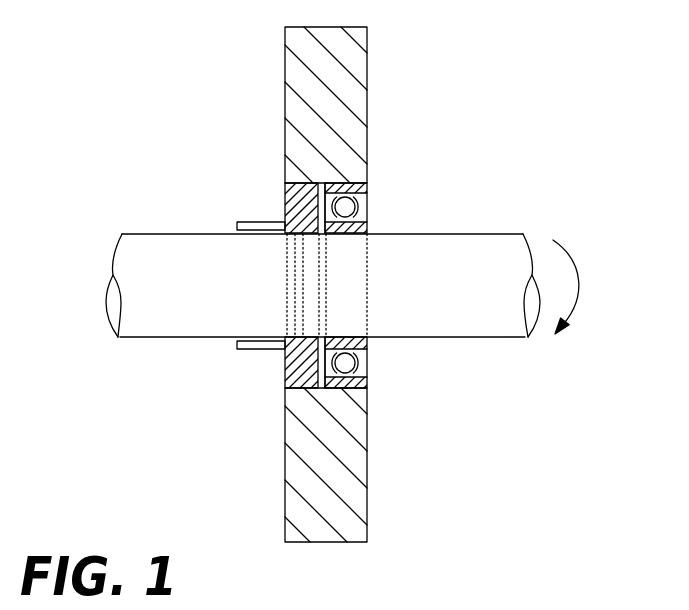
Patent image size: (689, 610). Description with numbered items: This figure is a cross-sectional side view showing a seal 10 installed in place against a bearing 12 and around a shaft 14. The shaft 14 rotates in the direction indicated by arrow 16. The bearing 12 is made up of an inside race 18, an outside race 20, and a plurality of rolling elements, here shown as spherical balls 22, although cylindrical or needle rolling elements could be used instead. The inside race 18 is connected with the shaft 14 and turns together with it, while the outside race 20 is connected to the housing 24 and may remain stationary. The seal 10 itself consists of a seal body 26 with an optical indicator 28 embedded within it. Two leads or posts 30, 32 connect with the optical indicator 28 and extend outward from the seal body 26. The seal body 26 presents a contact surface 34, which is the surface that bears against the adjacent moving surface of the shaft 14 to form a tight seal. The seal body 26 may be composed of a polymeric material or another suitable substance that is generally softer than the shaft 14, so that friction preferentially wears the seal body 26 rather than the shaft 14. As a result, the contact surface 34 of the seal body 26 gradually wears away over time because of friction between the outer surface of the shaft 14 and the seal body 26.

The seal 10 is at (222, 376).
The bearing 12 is at (392, 282).
The shaft 14 is at (495, 245).
The arrow 16 is at (578, 289).
The inside race 18 is at (368, 343).
The outside race 20 is at (368, 389).
The balls 22 is at (362, 369).
The housing 24 is at (330, 543).
The seal body 26 is at (286, 184).
The optical indicator 28 is at (300, 222).
The lead or post 30 is at (243, 221).
The lead or post 32 is at (235, 346).
The contact surface 34 is at (287, 333).